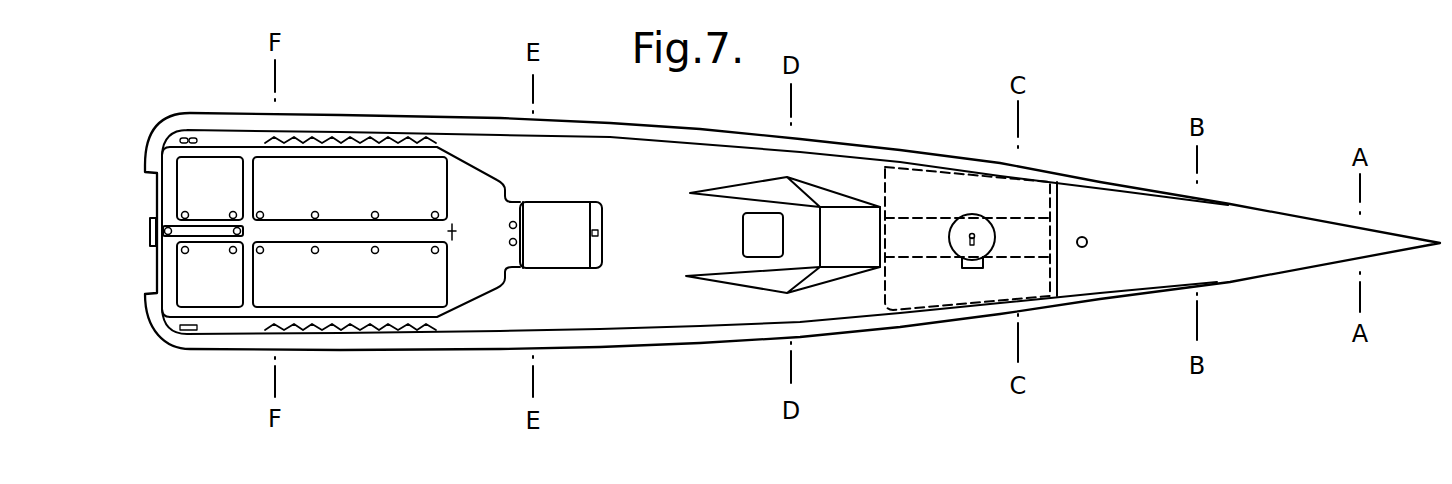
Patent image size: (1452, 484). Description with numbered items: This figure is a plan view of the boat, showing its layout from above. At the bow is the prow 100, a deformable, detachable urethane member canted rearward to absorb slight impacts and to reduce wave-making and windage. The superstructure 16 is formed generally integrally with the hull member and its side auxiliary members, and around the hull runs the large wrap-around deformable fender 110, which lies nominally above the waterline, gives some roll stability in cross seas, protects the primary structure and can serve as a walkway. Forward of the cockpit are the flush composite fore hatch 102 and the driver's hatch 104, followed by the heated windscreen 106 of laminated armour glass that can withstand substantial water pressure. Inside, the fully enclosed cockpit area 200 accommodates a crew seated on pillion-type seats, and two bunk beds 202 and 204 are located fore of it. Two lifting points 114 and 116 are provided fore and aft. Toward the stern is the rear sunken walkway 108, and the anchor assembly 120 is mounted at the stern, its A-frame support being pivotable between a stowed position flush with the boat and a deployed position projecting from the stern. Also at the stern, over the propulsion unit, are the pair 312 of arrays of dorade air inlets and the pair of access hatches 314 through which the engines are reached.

The prow 100 is at (1403, 255).
The fore hatch 102 is at (994, 235).
The driver's hatch 104 is at (752, 243).
The heated windscreen 106 is at (840, 281).
The rear sunken walkway 108 is at (321, 195).
The fender 110 is at (625, 348).
The lifting point 114 is at (1087, 248).
The lifting point 116 is at (160, 238).
The anchor assembly 120 is at (150, 230).
The superstructure 16 is at (620, 184).
The cockpit area 200 is at (634, 249).
The bunk bed 202 is at (927, 284).
The bunk bed 204 is at (937, 196).
The pair of arrays of dorade air inlets 312 is at (423, 303).
The access hatches 314 is at (430, 153).